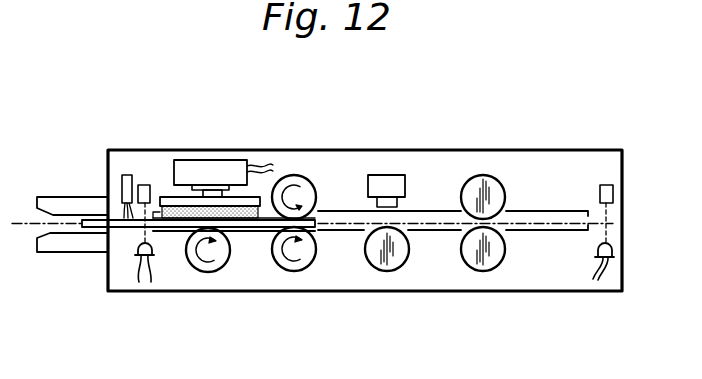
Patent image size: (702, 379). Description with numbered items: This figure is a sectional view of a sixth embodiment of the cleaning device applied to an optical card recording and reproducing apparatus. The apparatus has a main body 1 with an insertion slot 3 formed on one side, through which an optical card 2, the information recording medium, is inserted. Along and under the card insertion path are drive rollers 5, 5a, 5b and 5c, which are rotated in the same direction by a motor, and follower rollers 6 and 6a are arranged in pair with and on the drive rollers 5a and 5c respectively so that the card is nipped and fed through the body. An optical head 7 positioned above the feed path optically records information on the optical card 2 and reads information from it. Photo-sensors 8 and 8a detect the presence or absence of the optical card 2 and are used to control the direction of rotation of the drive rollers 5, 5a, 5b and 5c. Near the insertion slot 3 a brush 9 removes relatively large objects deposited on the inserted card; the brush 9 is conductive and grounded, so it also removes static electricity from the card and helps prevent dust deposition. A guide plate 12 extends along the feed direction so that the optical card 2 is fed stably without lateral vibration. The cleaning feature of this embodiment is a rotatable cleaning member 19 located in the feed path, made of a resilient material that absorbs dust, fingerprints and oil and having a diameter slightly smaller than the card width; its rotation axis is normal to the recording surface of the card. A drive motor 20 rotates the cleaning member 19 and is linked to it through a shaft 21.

The main body 1 is at (569, 150).
The optical card 2 is at (258, 228).
The insertion slot 3 is at (53, 203).
The drive roller 5 is at (213, 273).
The drive roller 5a is at (300, 271).
The drive roller 5b is at (388, 271).
The drive roller 5c is at (482, 271).
The follower roller 6 is at (298, 177).
The follower roller 6a is at (487, 177).
The optical head 7 is at (390, 182).
The photo-sensor 8 is at (147, 185).
The photo-sensor 8a is at (613, 192).
The brush 9 is at (122, 186).
The guide plate 12 is at (560, 232).
The cleaning member 19 is at (157, 262).
The drive motor 20 is at (225, 167).
The shaft 21 is at (212, 195).